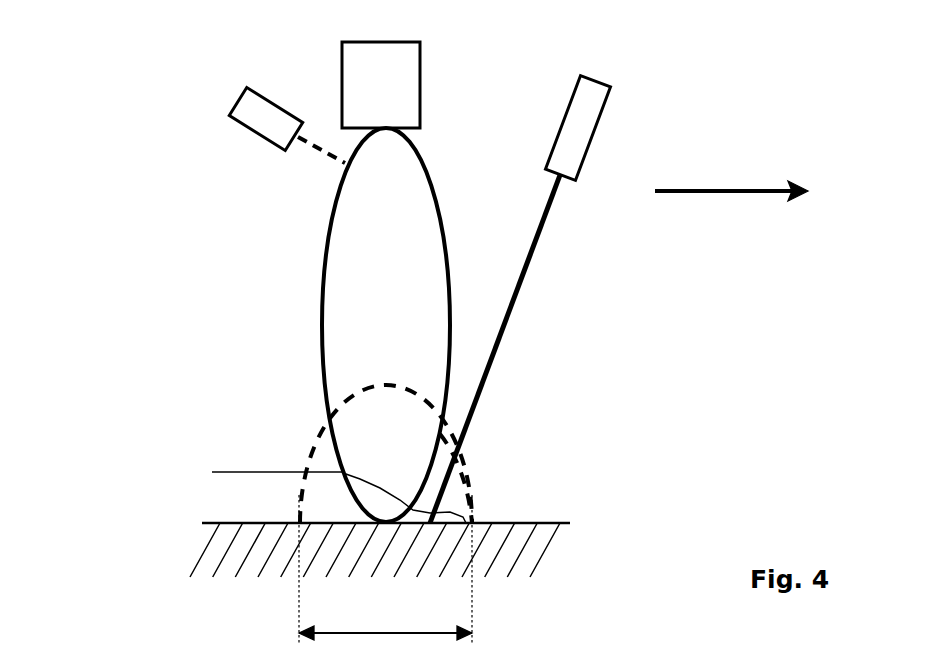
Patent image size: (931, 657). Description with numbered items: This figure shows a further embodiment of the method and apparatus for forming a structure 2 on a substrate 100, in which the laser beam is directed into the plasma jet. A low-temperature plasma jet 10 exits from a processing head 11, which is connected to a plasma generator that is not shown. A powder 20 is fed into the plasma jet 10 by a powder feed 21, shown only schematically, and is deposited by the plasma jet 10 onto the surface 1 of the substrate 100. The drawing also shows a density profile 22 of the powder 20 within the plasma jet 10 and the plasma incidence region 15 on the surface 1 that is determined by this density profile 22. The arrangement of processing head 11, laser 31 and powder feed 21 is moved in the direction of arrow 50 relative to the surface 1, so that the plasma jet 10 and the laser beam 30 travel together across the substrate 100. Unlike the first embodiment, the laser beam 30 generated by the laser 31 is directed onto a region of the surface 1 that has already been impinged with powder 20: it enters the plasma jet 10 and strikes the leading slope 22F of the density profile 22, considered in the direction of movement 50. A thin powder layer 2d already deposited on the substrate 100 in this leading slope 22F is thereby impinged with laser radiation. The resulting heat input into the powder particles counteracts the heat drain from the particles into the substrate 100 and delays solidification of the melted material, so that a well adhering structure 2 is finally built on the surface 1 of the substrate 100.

The surface 1 is at (549, 523).
The substrate 100 is at (553, 557).
The structure 2 is at (278, 472).
The thin powder layer 2d is at (450, 520).
The plasma incidence region 15 is at (358, 633).
The low-temperature plasma jet 10 is at (443, 227).
The processing head 11 is at (396, 97).
The powder 20 is at (325, 143).
The powder feed 21 is at (272, 97).
The density profile 22 is at (362, 408).
The leading slope 22F is at (460, 478).
The laser beam 30 is at (547, 217).
The laser 31 is at (610, 103).
The arrow 50 is at (737, 190).